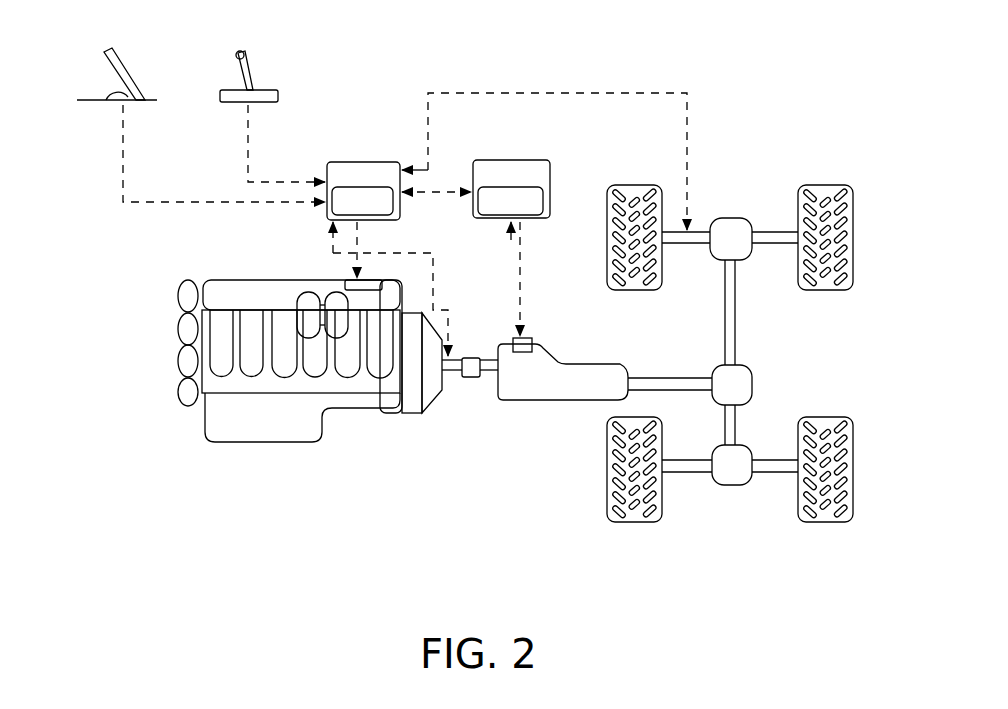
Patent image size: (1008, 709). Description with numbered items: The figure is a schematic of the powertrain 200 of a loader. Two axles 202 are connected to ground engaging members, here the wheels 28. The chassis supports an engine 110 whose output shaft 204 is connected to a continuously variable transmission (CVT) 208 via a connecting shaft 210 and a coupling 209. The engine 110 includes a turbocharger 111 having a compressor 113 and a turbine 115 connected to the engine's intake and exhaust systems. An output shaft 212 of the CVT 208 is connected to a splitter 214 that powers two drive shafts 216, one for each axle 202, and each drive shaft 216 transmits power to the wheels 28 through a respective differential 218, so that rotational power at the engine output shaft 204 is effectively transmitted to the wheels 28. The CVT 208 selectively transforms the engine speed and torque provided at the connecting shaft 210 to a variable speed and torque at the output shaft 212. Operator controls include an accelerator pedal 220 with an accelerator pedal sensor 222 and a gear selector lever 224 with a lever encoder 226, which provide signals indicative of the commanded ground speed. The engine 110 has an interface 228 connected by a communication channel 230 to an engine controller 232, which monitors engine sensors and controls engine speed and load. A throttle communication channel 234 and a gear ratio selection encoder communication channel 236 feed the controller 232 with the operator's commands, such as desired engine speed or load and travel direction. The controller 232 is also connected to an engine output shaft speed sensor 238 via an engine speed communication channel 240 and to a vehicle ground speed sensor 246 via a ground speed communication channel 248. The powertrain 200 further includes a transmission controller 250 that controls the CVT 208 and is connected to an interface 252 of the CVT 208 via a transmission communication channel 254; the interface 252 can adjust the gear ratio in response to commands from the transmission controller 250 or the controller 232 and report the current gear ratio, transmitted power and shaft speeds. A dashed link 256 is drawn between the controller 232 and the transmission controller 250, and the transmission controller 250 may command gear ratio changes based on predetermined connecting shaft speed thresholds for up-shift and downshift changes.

The powertrain 200 is at (648, 287).
The accelerator pedal 220 is at (110, 50).
The accelerator pedal sensor 222 is at (110, 87).
The gear selector lever 224 is at (244, 51).
The lever encoder 226 is at (275, 101).
The throttle communication channel 234 is at (121, 150).
The gear ratio selection encoder communication channel 236 is at (246, 135).
The engine controller 232 is at (348, 168).
The communication channel 230 is at (330, 248).
The interface 228 is at (345, 284).
The engine speed communication channel 240 is at (435, 282).
The engine 110 is at (218, 290).
The turbocharger 111 is at (312, 345).
The compressor 113 is at (300, 330).
The turbine 115 is at (337, 333).
The engine output shaft speed sensor 238 is at (332, 428).
The output shaft 204 is at (447, 378).
The coupling 209 is at (472, 357).
The connecting shaft 210 is at (488, 372).
The continuously variable transmission 208 is at (585, 364).
The interface 252 is at (533, 340).
The transmission communication channel 254 is at (521, 278).
The controller communication line 256 is at (430, 198).
The ground speed communication channel 248 is at (583, 92).
The transmission controller 250 is at (545, 168).
The wheels 28 is at (628, 185).
The vehicle ground speed sensor 246 is at (690, 230).
The axles 202 is at (778, 232).
The differential 218 is at (732, 218).
The drive shafts 216 is at (737, 335).
The splitter 214 is at (752, 372).
The output shaft 212 is at (690, 354).